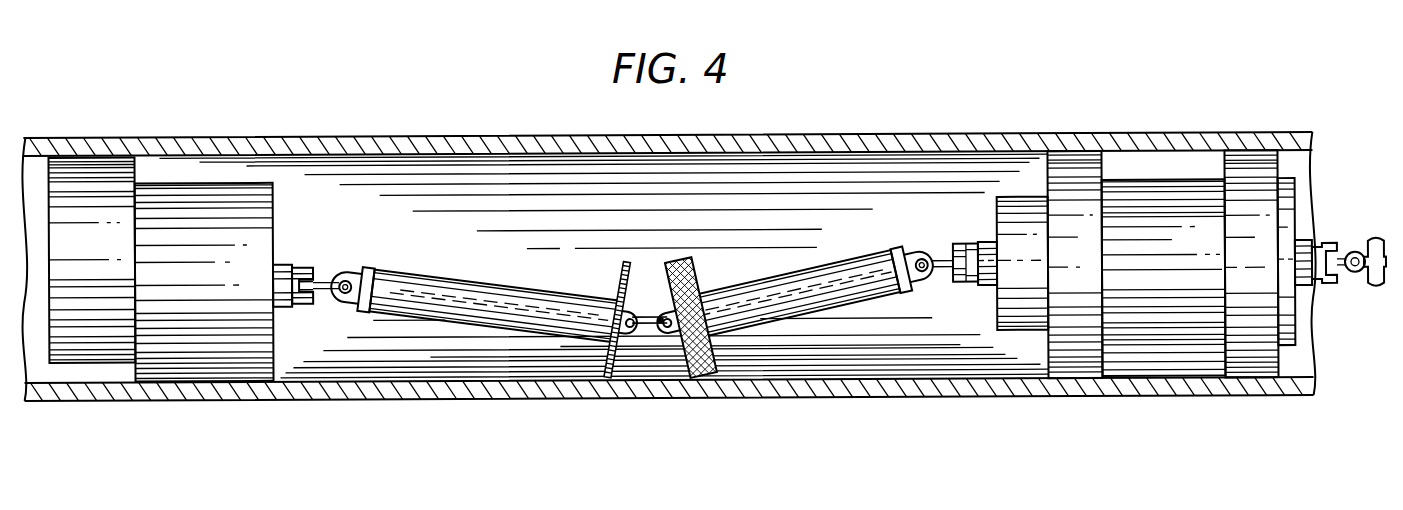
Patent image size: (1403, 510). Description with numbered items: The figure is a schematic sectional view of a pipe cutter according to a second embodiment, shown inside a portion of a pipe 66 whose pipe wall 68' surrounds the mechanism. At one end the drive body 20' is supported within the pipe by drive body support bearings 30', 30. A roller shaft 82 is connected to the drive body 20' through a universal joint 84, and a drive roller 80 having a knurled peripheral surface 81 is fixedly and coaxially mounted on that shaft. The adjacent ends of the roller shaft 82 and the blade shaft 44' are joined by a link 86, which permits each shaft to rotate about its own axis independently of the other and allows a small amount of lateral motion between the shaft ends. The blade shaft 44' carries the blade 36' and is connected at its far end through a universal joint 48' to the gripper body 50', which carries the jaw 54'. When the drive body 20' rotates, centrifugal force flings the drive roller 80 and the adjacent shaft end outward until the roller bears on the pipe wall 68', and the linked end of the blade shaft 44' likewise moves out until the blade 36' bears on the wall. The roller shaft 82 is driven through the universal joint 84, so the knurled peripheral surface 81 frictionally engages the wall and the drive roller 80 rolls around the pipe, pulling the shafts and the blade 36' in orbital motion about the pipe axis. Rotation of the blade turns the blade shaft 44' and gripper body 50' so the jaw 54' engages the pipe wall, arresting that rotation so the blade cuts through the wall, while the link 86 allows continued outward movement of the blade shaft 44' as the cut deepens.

The jaw 54' is at (91, 227).
The gripper body 50' is at (203, 237).
The universal joint 48' is at (310, 257).
The blade shaft 44' is at (484, 291).
The blade 36' is at (594, 317).
The knurled peripheral surface 81 is at (653, 313).
The drive roller 80 is at (700, 270).
The roller shaft 82 is at (884, 240).
The universal joint 84 is at (945, 257).
The link 86 is at (660, 323).
The drive body support bearings 30' is at (1053, 234).
The drive body 20' is at (1163, 232).
The drive body support bearings 30 is at (1305, 233).
The pipe wall 68' is at (669, 285).
The pipe 66 is at (1046, 400).